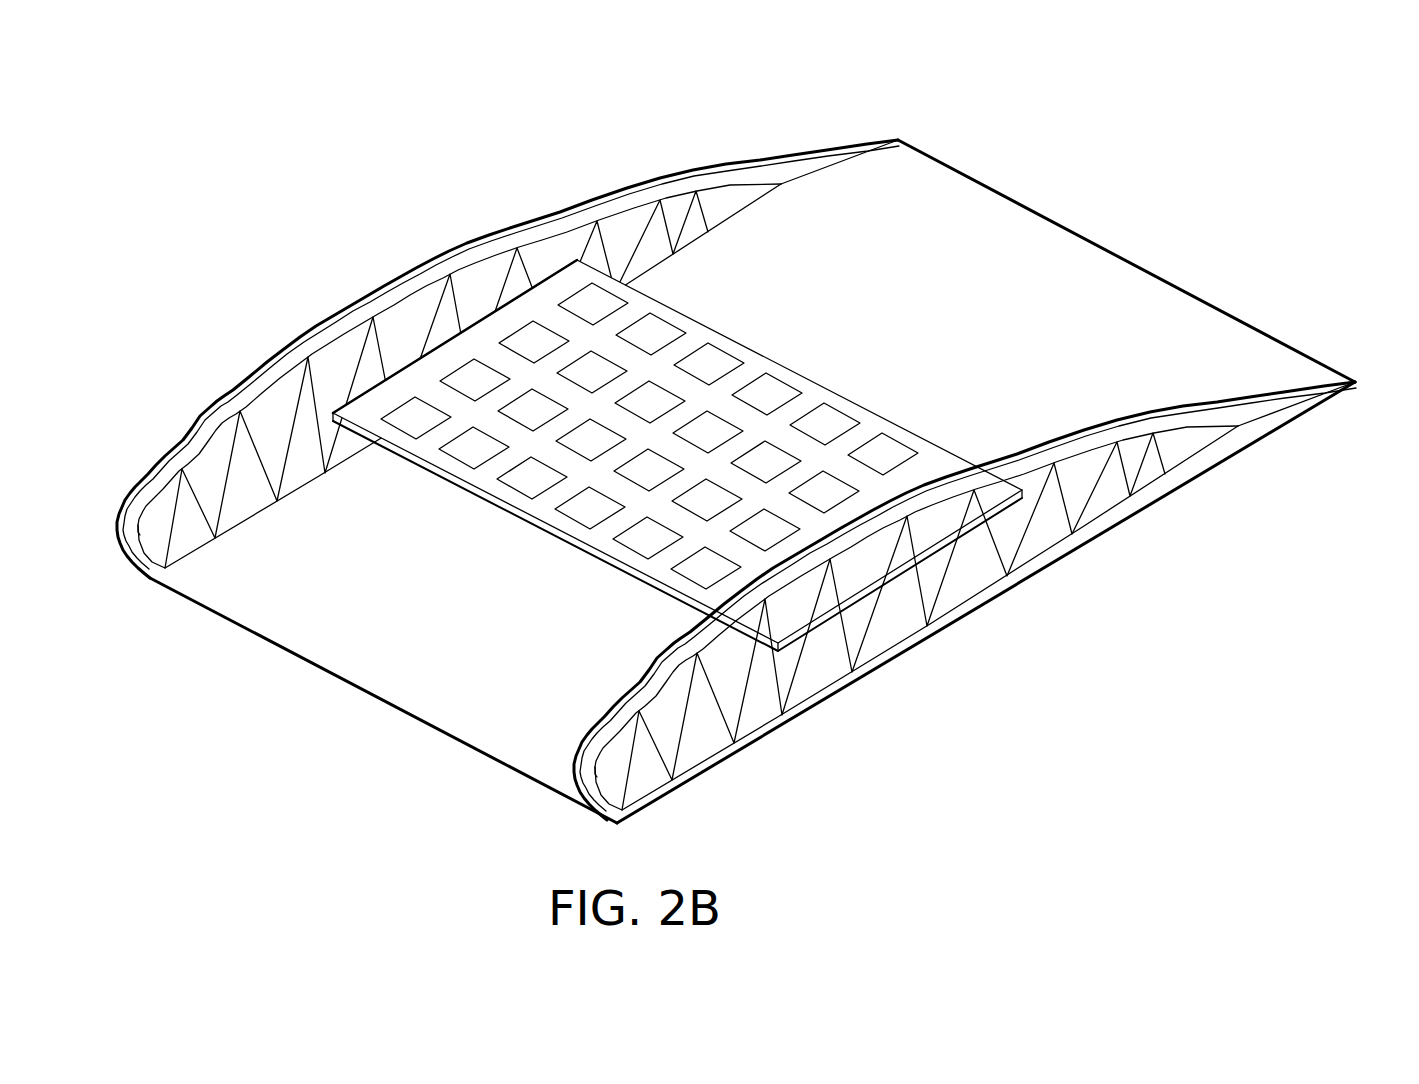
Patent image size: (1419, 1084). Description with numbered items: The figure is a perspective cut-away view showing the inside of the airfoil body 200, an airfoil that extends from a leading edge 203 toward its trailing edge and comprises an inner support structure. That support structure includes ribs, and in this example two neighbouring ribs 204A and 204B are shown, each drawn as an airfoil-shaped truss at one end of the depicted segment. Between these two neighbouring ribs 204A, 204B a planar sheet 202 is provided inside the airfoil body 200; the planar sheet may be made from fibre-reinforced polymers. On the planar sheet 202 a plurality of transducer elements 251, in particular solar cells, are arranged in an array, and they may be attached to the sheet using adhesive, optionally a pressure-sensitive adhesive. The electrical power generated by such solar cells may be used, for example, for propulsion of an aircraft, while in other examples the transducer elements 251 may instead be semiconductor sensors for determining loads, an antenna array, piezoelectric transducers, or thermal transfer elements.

The airfoil body 200 is at (343, 240).
The planar sheet 202 is at (677, 455).
The leading edge 203 is at (368, 668).
The rib 204A is at (1272, 398).
The rib 204B is at (738, 180).
The transducer elements 251 is at (528, 478).